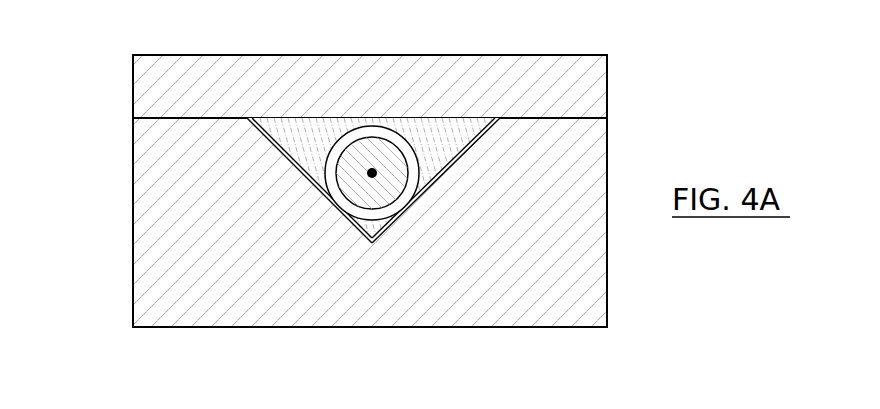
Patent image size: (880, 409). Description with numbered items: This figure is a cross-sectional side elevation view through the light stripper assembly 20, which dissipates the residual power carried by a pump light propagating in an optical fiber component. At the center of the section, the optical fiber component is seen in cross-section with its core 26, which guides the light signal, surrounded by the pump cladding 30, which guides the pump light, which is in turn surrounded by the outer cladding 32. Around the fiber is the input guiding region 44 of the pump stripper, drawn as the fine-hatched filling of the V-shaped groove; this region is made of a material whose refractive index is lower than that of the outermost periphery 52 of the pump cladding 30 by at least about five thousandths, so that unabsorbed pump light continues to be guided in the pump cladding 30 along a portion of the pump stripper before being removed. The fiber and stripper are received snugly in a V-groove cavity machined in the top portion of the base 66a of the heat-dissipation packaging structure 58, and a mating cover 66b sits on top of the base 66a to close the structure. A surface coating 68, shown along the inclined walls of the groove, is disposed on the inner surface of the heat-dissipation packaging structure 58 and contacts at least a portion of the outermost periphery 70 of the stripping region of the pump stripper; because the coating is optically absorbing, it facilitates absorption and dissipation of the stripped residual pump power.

The light stripper assembly 20 is at (672, 74).
The core 26 is at (376, 170).
The pump cladding 30 is at (378, 192).
The outer cladding 32 is at (357, 133).
The input guiding region 44 is at (448, 130).
The outermost periphery of the pump cladding 52 is at (352, 222).
The heat-dissipation packaging structure 58 is at (88, 267).
The base 66a is at (183, 308).
The mating cover 66b is at (182, 77).
The surface coating 68 is at (470, 148).
The outermost periphery of the stripping region 70 is at (288, 159).